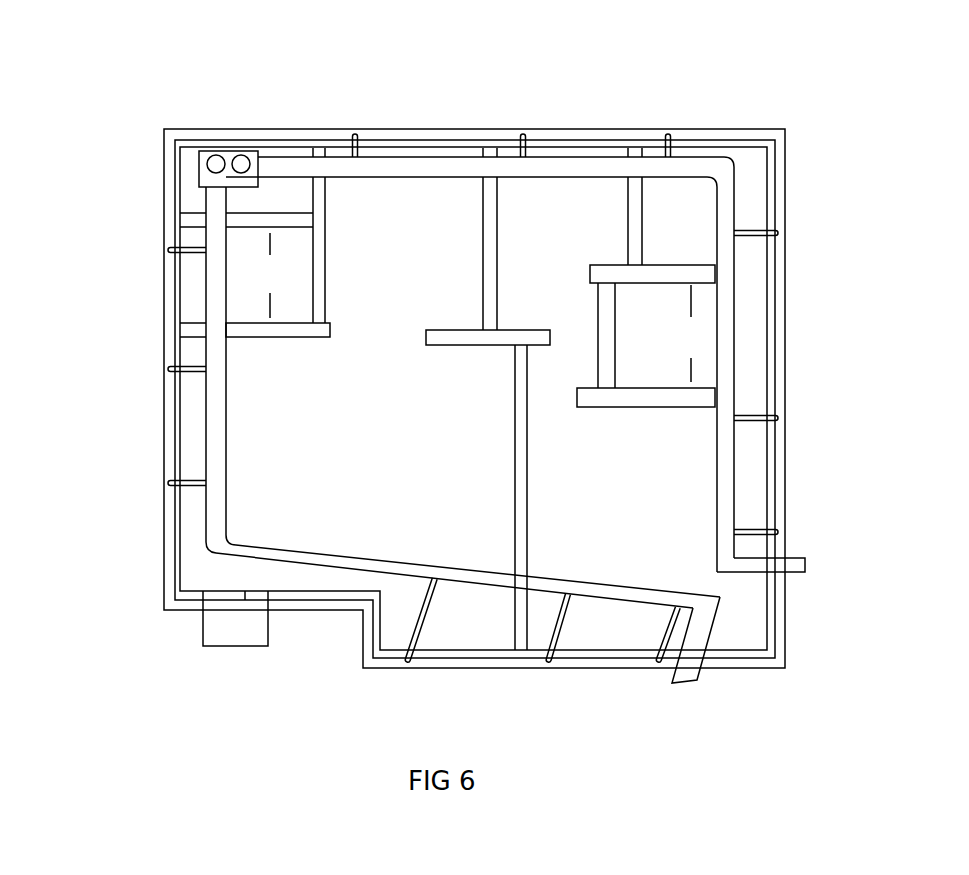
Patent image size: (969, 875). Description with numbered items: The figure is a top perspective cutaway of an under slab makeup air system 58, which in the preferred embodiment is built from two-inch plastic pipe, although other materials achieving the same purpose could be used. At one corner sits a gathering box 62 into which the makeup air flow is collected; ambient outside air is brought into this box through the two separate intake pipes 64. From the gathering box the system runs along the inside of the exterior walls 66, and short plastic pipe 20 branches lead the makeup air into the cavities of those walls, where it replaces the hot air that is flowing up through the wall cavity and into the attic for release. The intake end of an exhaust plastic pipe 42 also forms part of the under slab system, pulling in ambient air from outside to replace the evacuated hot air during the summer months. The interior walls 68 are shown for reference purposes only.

The pipe 20 is at (355, 132).
The exhaust plastic pipe 42 is at (805, 562).
The under slab makeup air system 58 is at (470, 382).
The gathering box 62 is at (228, 151).
The intake pipes 64 is at (242, 163).
The exterior walls 66 is at (752, 129).
The interior walls 68 is at (307, 277).